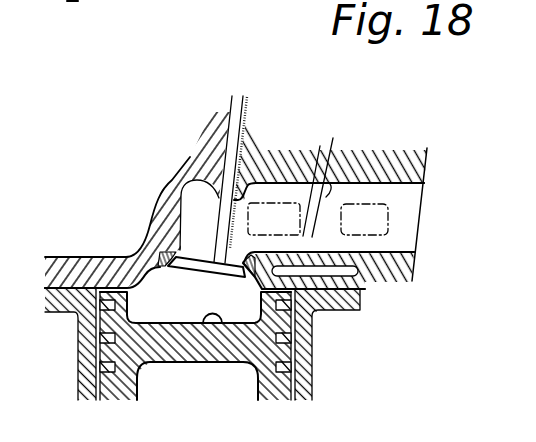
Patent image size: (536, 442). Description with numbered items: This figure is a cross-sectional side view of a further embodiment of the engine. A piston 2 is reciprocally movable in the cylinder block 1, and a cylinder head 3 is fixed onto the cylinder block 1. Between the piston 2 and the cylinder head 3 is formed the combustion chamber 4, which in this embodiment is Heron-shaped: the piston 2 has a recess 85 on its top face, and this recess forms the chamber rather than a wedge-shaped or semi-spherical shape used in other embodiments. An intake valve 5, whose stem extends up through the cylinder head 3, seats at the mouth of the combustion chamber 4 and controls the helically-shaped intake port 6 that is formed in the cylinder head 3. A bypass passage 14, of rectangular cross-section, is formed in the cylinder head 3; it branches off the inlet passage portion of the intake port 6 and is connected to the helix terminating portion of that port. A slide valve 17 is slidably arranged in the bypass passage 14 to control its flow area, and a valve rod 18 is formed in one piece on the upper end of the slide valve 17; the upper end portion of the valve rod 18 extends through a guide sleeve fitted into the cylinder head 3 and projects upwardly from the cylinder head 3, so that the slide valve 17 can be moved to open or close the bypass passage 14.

The cylinder block 1 is at (79, 371).
The piston 2 is at (195, 356).
The cylinder head 3 is at (94, 258).
The combustion chamber 4 is at (176, 307).
The intake valve 5 is at (218, 222).
The helically-shaped intake port 6 is at (374, 190).
The bypass passage 14 is at (333, 229).
The slide valve 17 is at (303, 233).
The valve rod 18 is at (308, 232).
The recess 85 is at (213, 318).